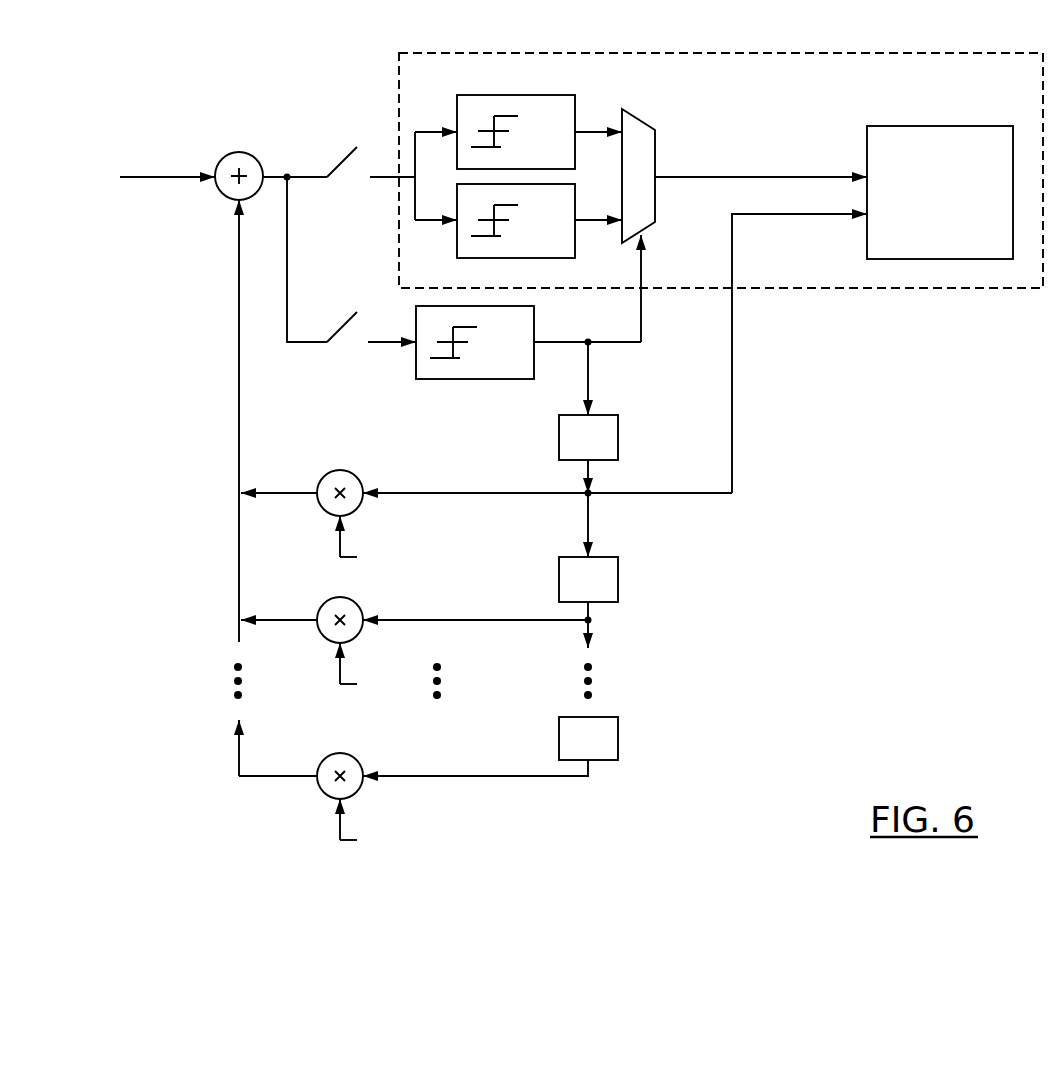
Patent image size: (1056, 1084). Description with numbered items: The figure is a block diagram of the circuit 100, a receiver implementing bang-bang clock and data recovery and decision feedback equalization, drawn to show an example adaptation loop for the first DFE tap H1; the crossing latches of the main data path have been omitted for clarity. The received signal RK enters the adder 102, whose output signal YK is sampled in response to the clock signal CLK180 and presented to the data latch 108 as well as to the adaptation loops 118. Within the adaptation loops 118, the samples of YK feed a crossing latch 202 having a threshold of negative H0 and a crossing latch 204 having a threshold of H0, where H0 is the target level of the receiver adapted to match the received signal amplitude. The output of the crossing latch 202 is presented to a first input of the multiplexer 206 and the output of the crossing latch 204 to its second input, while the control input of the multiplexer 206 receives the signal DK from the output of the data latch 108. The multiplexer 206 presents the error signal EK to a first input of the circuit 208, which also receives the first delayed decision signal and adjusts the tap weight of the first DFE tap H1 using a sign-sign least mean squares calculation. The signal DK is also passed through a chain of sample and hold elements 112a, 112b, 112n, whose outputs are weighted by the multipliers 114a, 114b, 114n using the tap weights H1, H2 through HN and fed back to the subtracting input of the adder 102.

The circuit 100 is at (935, 538).
The adder 102 is at (238, 150).
The data latch 108 is at (450, 380).
The sample and hold element 112a is at (559, 438).
The sample and hold element 112b is at (559, 580).
The sample and hold element 112n is at (559, 740).
The multiplier 114a is at (355, 512).
The multiplier 114b is at (355, 639).
The multiplier 114n is at (355, 795).
The adaptation loops 118 is at (858, 290).
The crossing latch 202 is at (480, 95).
The crossing latch 204 is at (550, 258).
The multiplexer 206 is at (637, 118).
The sign-sign LMS circuit 208 is at (908, 126).